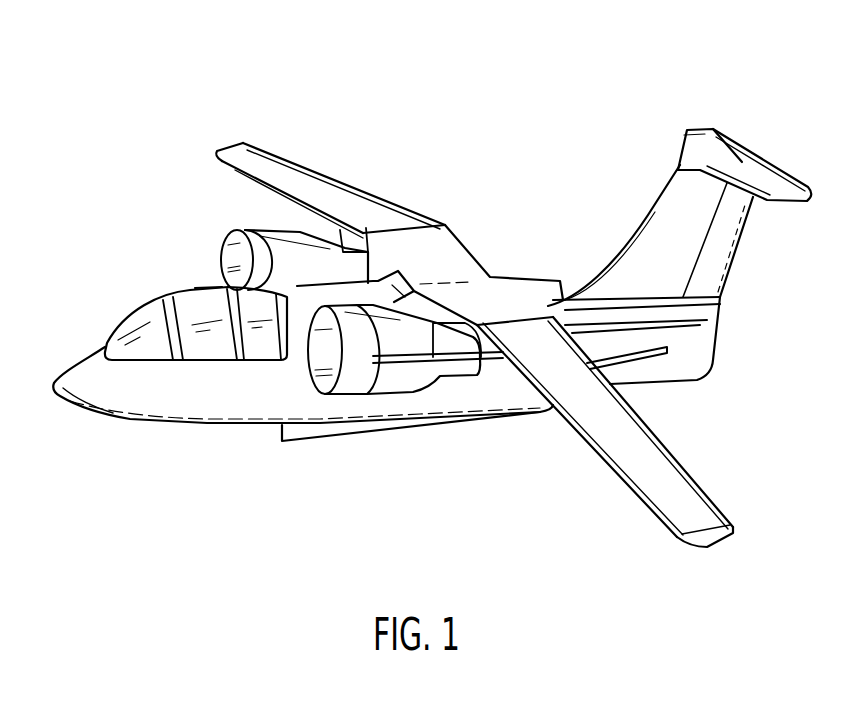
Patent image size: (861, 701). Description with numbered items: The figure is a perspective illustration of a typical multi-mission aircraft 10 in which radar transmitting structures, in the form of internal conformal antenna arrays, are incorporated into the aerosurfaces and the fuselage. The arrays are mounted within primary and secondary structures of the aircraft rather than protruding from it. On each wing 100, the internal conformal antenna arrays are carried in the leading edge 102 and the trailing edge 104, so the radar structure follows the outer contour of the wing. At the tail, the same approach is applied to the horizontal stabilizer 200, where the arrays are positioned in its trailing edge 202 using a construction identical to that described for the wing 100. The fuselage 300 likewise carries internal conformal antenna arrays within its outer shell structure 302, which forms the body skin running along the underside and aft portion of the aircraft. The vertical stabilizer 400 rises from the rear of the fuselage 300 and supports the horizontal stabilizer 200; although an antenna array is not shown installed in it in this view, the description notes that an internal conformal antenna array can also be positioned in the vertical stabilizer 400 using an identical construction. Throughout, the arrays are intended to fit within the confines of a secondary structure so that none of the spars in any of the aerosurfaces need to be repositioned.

The multi-mission aircraft 10 is at (456, 30).
The wing 100 is at (250, 157).
The leading edge 102 is at (280, 177).
The trailing edge 104 is at (305, 168).
The horizontal stabilizer 200 is at (693, 148).
The trailing edge of horizontal stabilizer 202 is at (760, 167).
The fuselage 300 is at (218, 413).
The outer shell structure 302 is at (320, 440).
The vertical stabilizer 400 is at (640, 243).